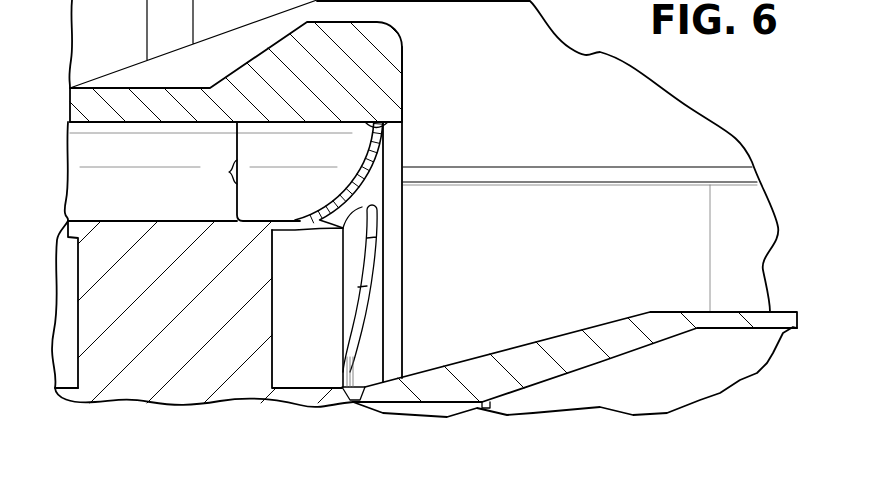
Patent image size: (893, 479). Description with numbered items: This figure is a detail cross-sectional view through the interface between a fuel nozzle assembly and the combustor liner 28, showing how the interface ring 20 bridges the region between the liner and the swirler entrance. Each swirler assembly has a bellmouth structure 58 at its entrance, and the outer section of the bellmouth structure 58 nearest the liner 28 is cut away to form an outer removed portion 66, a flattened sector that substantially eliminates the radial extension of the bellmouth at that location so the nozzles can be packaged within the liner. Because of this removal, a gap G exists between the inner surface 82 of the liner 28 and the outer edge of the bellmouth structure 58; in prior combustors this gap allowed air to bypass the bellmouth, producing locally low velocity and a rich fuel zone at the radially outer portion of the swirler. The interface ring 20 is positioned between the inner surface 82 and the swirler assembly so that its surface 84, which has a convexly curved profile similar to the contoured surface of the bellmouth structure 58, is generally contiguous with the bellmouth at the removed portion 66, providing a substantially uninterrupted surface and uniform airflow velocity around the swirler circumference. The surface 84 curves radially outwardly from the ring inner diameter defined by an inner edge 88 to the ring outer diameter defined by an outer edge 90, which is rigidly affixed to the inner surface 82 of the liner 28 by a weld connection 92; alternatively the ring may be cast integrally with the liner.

The liner 28 is at (140, 103).
The inner surface 82 is at (215, 122).
The gap G is at (223, 172).
The interface ring 20 is at (388, 158).
The interface ring surface 84 is at (367, 183).
The outer edge 90 is at (378, 122).
The weld connection 92 is at (368, 122).
The inner edge 88 is at (288, 230).
The outer removed portion 66 is at (322, 231).
The bellmouth structure 58 is at (357, 370).